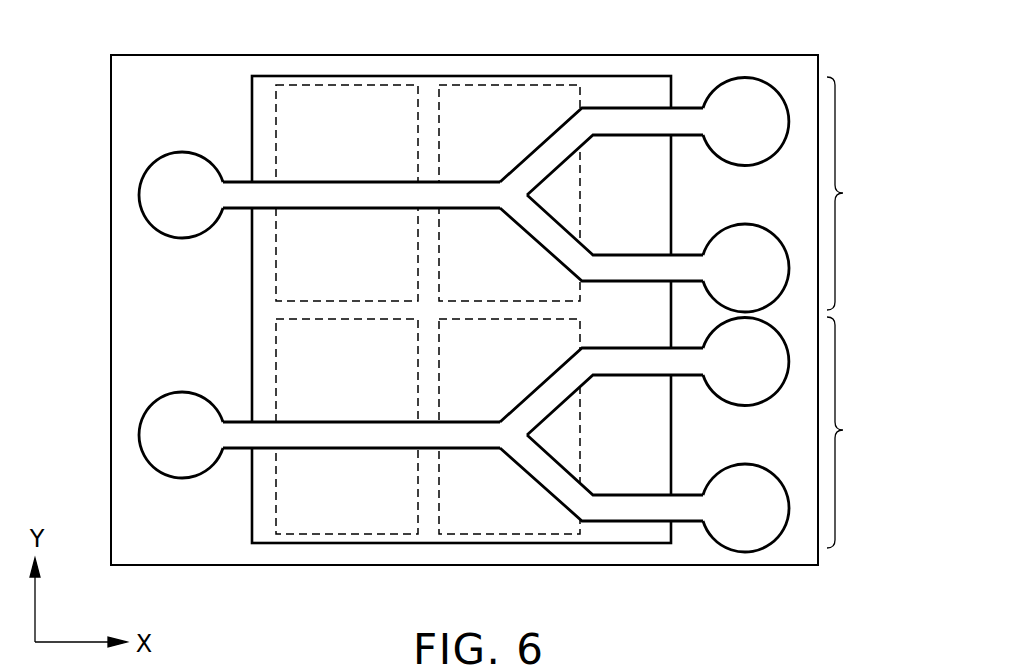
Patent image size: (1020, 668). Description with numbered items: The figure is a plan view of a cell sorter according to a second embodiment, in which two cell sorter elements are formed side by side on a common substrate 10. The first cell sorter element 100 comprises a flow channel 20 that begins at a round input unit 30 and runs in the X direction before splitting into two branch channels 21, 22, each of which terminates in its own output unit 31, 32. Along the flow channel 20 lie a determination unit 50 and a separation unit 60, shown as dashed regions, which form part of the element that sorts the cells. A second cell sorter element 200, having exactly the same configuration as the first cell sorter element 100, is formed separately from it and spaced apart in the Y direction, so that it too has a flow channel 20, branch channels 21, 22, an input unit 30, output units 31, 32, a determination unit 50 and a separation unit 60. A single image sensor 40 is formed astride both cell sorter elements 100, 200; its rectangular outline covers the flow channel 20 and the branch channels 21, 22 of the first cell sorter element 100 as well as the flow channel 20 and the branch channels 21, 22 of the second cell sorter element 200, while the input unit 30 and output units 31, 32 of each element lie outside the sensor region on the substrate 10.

The substrate 10 is at (717, 566).
The flow channel 20 is at (263, 181).
The branch channel 21 is at (647, 137).
The branch channel 22 is at (612, 255).
The input unit 30 is at (184, 238).
The output unit 31 is at (742, 78).
The output unit 32 is at (746, 224).
The image sensor 40 is at (633, 76).
The determination unit 50 is at (393, 84).
The separation unit 60 is at (533, 84).
The first cell sorter element 100 is at (857, 193).
The second cell sorter element 200 is at (857, 432).